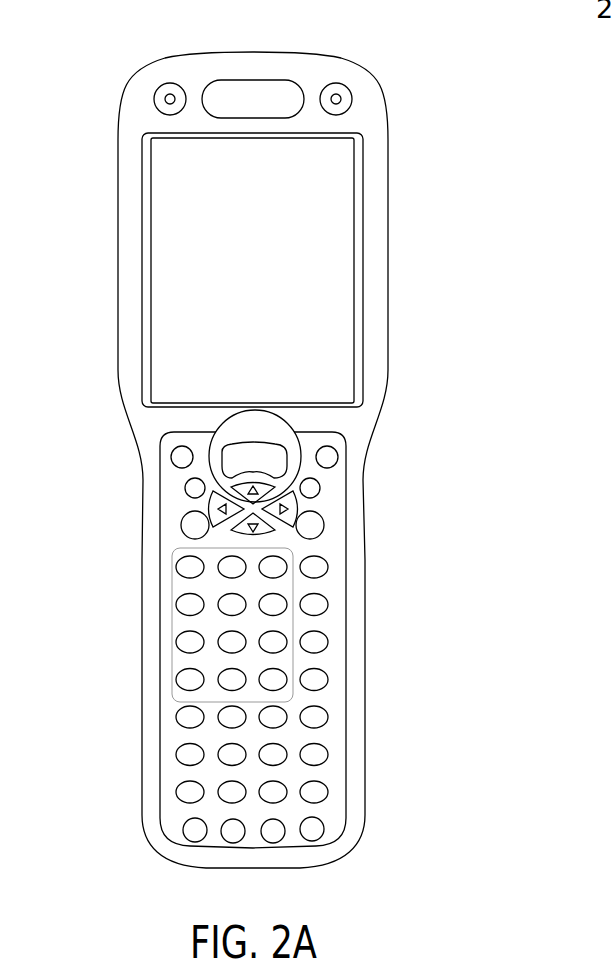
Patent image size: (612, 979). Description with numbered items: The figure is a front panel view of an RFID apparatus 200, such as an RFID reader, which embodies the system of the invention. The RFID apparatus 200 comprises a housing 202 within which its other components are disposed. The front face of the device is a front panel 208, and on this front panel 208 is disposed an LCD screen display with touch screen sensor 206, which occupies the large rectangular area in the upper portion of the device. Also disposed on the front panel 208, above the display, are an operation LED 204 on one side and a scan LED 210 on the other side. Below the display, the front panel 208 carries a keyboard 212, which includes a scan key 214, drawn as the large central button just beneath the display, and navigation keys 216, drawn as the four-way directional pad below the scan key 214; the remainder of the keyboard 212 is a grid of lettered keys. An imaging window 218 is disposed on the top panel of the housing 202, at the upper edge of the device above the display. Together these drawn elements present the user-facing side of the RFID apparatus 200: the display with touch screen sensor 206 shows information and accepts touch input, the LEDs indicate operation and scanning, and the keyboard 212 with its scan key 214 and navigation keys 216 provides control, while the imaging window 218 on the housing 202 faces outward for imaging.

The RFID apparatus 200 is at (412, 58).
The housing 202 is at (389, 296).
The operation LED 204 is at (155, 87).
The LCD screen display with touch screen sensor 206 is at (162, 229).
The front panel 208 is at (119, 153).
The scan LED 210 is at (352, 102).
The keyboard 212 is at (172, 627).
The scan key 214 is at (242, 443).
The navigation keys 216 is at (216, 508).
The imaging window 218 is at (253, 52).